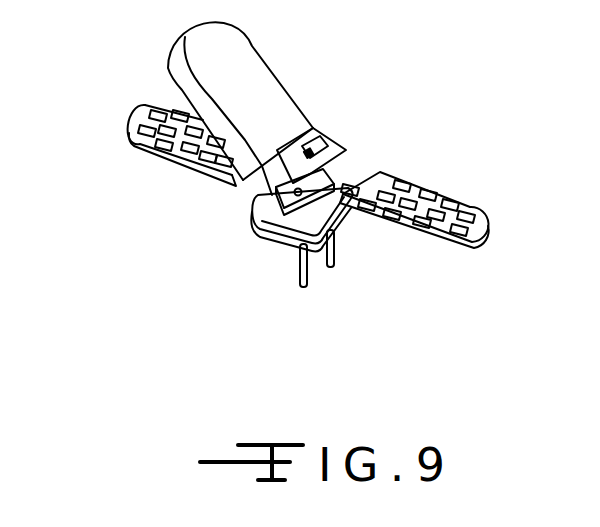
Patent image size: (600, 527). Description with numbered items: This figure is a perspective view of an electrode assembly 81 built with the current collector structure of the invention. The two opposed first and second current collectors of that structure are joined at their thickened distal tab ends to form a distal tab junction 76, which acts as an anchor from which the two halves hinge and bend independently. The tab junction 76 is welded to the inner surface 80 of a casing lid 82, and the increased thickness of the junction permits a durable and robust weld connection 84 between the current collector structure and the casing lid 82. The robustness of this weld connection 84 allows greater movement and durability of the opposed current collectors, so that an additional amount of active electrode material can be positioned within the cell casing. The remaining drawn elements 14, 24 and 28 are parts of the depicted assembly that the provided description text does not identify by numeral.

The perforated pad 14 is at (147, 127).
The arm 24 is at (230, 80).
The legs 28 is at (337, 260).
The tab junction 76 is at (313, 158).
The inner surface 80 is at (307, 150).
The electrode assembly 81 is at (424, 72).
The casing lid 82 is at (266, 230).
The weld connection 84 is at (258, 205).